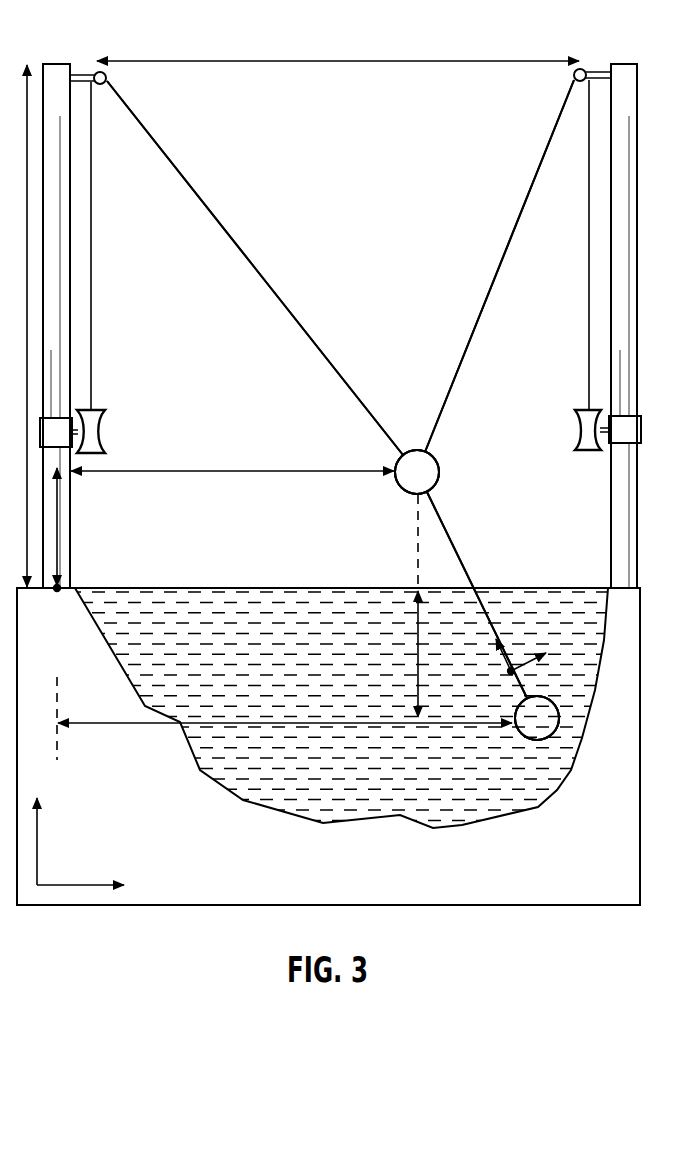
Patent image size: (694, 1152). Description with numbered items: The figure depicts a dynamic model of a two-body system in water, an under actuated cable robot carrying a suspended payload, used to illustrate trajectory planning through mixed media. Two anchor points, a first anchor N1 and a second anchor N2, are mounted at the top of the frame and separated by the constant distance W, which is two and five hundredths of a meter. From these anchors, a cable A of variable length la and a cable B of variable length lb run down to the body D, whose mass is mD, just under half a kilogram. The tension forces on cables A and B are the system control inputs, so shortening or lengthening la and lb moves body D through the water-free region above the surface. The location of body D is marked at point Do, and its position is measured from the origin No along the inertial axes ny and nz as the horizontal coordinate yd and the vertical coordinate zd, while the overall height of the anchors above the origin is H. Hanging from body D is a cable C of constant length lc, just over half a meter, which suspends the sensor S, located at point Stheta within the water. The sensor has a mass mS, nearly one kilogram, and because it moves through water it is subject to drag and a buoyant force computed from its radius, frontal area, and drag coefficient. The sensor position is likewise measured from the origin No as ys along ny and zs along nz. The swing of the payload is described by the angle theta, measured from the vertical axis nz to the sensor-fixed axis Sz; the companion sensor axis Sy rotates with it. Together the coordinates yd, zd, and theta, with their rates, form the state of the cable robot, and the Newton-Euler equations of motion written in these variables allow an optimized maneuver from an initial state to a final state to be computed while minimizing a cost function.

The second anchor point N2 is at (100, 52).
The first anchor point N1 is at (581, 50).
The distance between N1 and N2 W is at (338, 42).
The height of anchors above datum H is at (13, 326).
The length of cable B lb is at (255, 268).
The length of cable A la is at (499, 266).
The length of cable C lc is at (477, 595).
The cable A is at (497, 288).
The cable B is at (220, 191).
The cable C is at (467, 544).
The body D is at (441, 484).
The position of D Do is at (417, 472).
The mass of D mD is at (471, 494).
The angle θ theta is at (427, 541).
The ny measure of D's position from No yd is at (232, 491).
The nz measure of D's position from No zd is at (79, 527).
The origin point No is at (58, 609).
The nz measure of S's position from No zs is at (402, 654).
The ny measure of S's position from No ys is at (284, 719).
The position of S Stheta is at (537, 718).
The sensor S is at (518, 737).
The mass of S mS is at (495, 750).
The unit vector sz Sz is at (516, 636).
The unit vector sy Sy is at (546, 643).
The unit vector nz is at (37, 819).
The unit vector ny is at (99, 878).